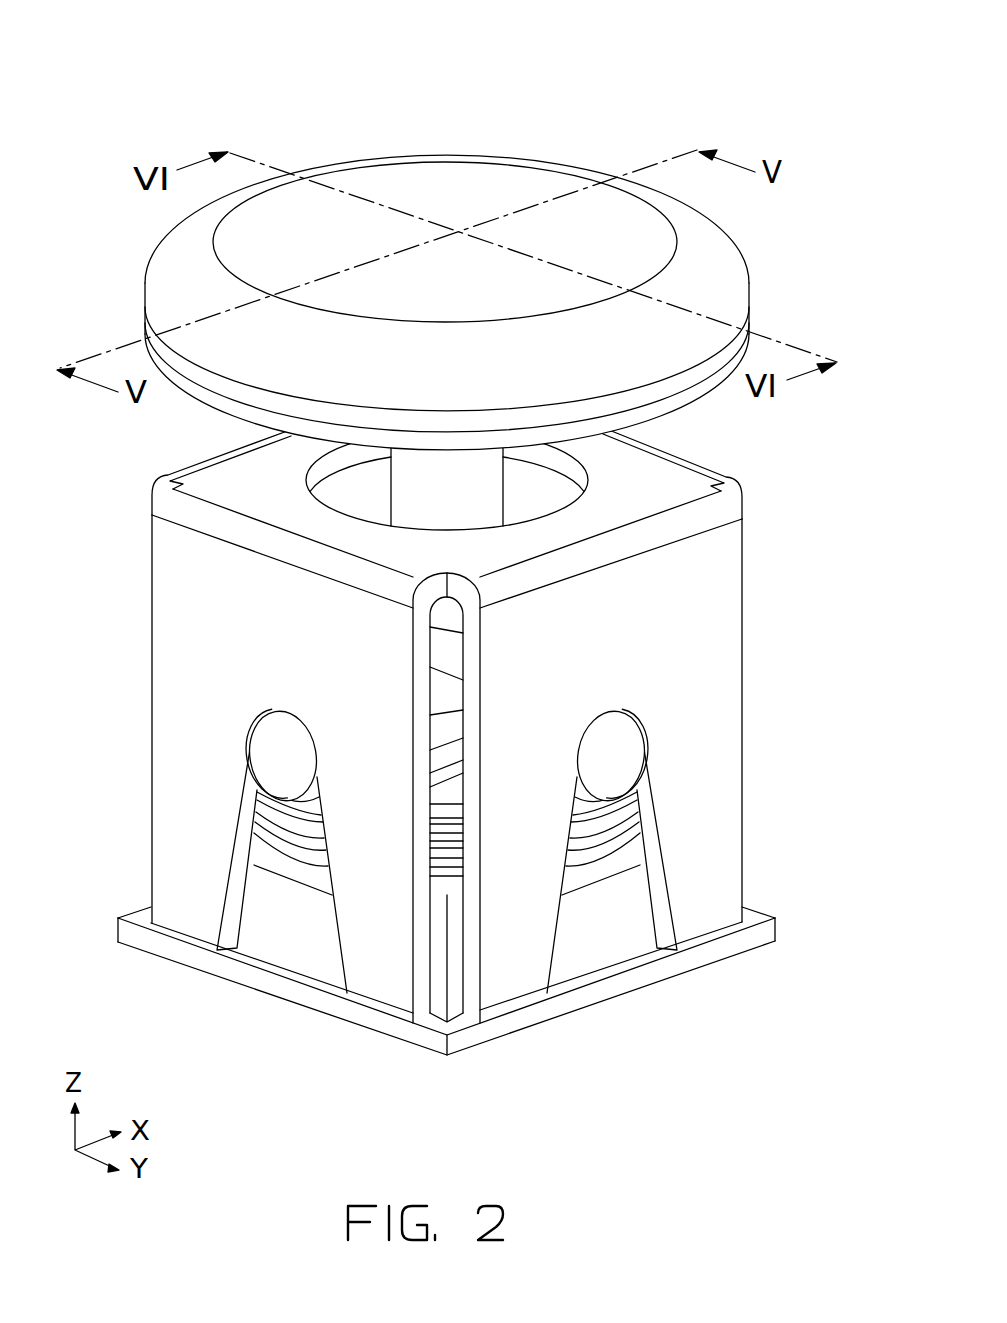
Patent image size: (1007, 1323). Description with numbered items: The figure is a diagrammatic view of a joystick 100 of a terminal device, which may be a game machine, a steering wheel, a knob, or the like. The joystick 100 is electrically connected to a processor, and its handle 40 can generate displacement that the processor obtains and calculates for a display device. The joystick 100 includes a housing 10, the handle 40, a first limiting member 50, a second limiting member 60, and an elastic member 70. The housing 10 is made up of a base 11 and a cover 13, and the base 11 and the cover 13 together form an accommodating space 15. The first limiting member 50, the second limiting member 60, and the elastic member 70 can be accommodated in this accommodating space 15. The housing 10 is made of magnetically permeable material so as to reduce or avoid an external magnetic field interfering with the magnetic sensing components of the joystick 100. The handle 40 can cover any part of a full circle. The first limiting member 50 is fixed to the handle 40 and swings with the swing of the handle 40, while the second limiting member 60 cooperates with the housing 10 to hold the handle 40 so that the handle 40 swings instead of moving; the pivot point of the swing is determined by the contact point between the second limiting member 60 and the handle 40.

The joystick 100 is at (540, 28).
The housing 10 is at (823, 990).
The base 11 is at (617, 938).
The cover 13 is at (707, 908).
The accommodating space 15 is at (447, 891).
The handle 40 is at (700, 258).
The first limiting member 50 is at (277, 750).
The second limiting member 60 is at (618, 748).
The elastic member 70 is at (618, 817).